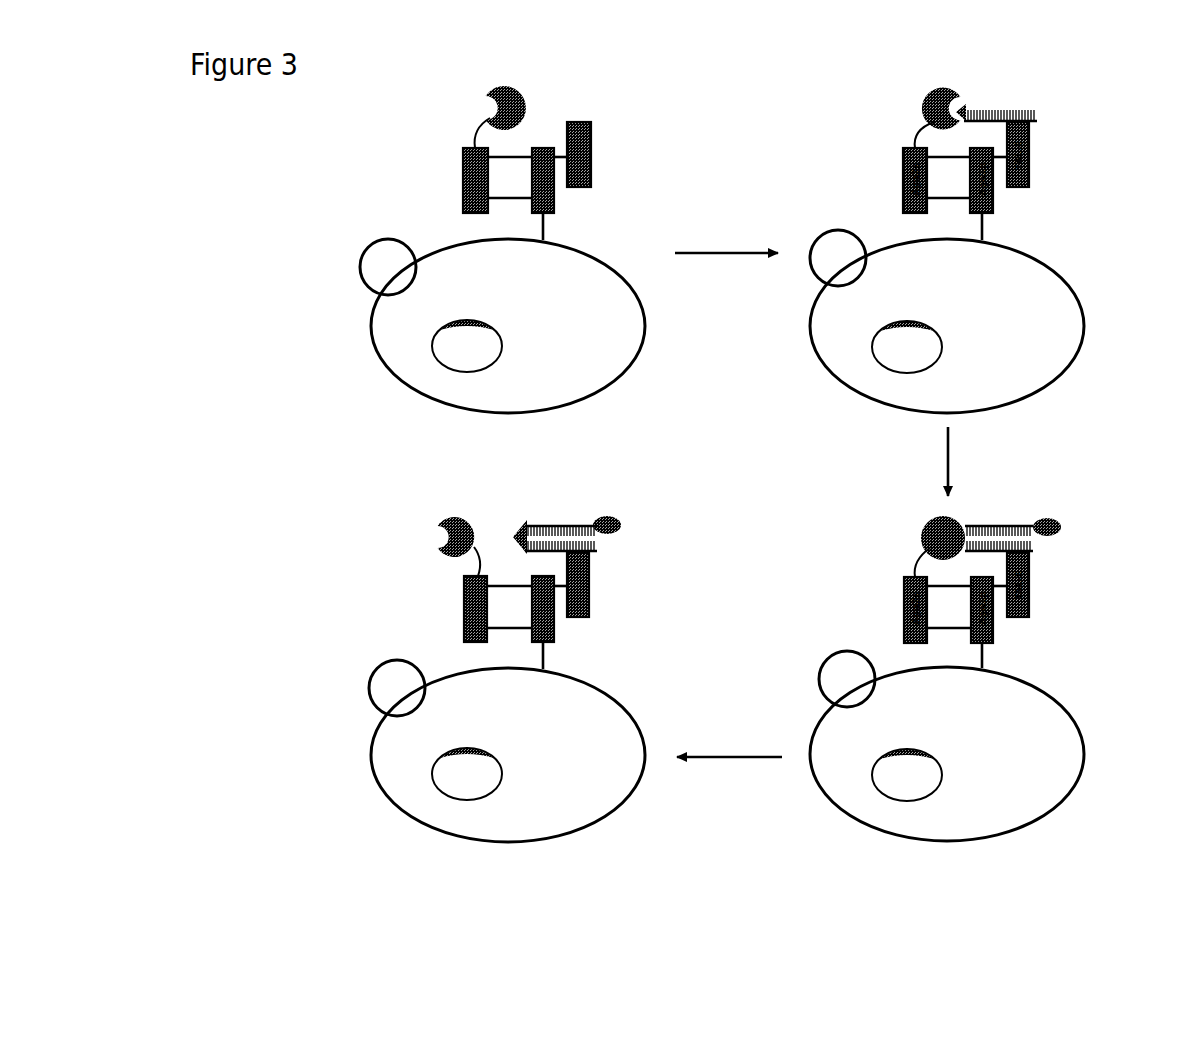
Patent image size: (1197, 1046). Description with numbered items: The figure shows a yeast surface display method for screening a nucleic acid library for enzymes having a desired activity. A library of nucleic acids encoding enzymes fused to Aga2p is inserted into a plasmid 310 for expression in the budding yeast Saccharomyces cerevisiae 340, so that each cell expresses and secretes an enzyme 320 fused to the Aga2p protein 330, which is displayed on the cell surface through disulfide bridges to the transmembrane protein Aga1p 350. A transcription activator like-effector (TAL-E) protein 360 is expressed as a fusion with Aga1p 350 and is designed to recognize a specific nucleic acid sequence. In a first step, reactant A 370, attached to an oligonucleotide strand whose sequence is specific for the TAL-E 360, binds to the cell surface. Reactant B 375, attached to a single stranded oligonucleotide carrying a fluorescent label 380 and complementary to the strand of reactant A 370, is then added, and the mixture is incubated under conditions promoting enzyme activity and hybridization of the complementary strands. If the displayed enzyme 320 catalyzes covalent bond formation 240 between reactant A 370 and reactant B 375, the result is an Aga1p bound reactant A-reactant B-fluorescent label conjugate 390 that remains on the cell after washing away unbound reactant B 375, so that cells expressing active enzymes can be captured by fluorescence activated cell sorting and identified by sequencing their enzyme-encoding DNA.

The plasmid 310 is at (508, 346).
The enzyme 320 is at (478, 115).
The Aga2p protein 330 is at (461, 181).
The budding yeast Saccharomyces cerevisiae 340 is at (370, 327).
The Aga1p 350 is at (560, 208).
The transcription activator like-effector (TAL-E) protein 360 is at (595, 153).
The reactant A 370 is at (1042, 115).
The bond formation 240 is at (953, 537).
The reactant B 375 is at (1015, 516).
The fluorescent label 380 is at (1065, 527).
The Aga1p bound reactant A-reactant B-fluorescent label conjugate 390 is at (652, 518).